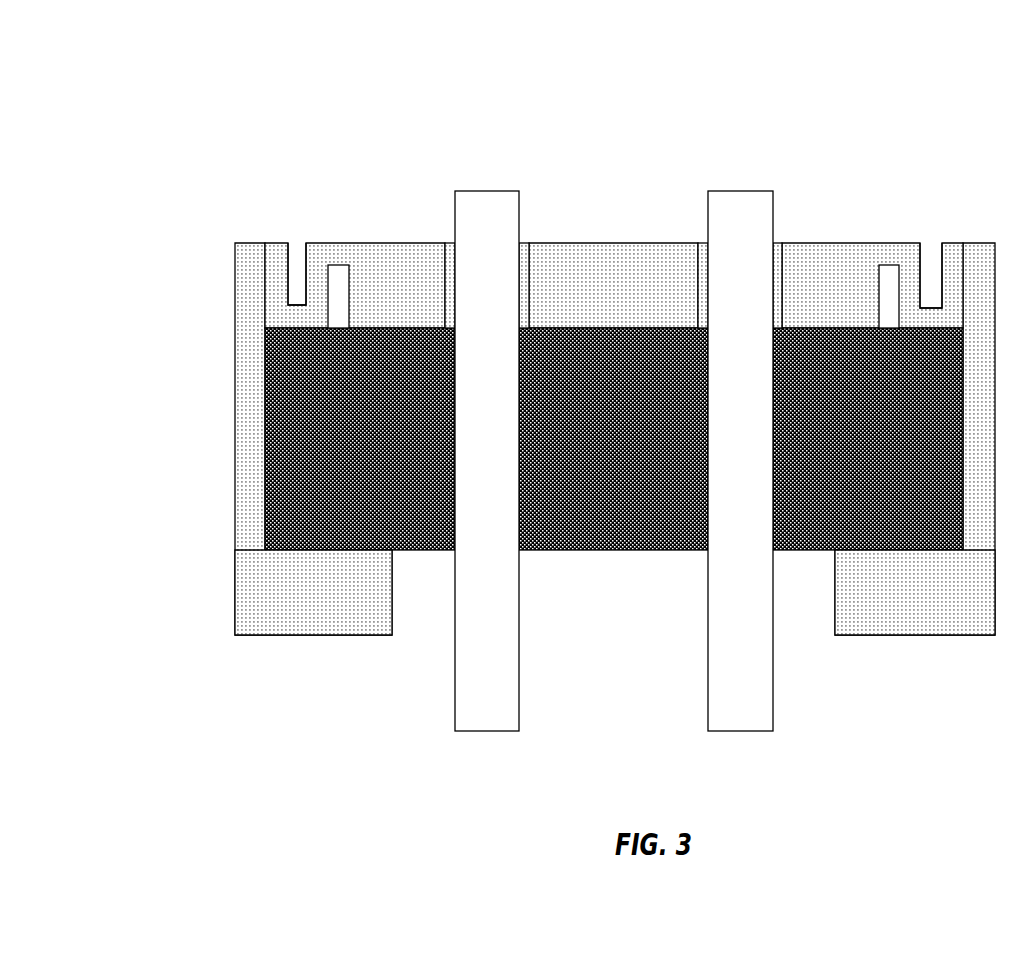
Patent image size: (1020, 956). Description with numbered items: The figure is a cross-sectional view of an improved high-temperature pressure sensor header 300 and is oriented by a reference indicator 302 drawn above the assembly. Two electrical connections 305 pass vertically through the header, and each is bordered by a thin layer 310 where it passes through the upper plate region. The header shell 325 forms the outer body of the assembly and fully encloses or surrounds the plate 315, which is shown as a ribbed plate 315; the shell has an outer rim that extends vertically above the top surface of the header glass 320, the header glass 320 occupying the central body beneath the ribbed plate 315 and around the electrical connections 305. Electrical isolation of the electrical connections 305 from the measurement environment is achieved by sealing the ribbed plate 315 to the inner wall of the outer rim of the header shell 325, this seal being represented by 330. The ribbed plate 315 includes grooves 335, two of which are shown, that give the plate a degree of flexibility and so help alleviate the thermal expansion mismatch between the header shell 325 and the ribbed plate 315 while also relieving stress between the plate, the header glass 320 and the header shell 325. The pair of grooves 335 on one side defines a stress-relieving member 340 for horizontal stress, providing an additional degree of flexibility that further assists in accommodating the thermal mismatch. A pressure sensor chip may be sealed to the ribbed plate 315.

The pressure sensor header 300 is at (112, 94).
The direction / view indicator 302 is at (615, 108).
The electrical connections 305 is at (704, 208).
The liner layer 310 is at (531, 240).
The ribbed plate 315 is at (410, 297).
The header glass 320 is at (635, 454).
The header shell 325 is at (335, 605).
The seal 330 is at (258, 237).
The grooves 335 is at (350, 308).
The stress-relieving member 340 is at (316, 291).